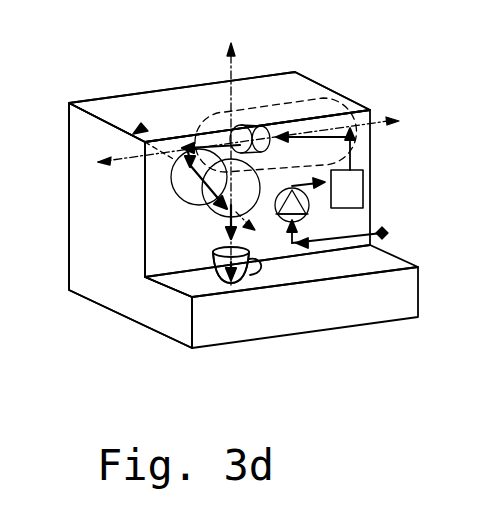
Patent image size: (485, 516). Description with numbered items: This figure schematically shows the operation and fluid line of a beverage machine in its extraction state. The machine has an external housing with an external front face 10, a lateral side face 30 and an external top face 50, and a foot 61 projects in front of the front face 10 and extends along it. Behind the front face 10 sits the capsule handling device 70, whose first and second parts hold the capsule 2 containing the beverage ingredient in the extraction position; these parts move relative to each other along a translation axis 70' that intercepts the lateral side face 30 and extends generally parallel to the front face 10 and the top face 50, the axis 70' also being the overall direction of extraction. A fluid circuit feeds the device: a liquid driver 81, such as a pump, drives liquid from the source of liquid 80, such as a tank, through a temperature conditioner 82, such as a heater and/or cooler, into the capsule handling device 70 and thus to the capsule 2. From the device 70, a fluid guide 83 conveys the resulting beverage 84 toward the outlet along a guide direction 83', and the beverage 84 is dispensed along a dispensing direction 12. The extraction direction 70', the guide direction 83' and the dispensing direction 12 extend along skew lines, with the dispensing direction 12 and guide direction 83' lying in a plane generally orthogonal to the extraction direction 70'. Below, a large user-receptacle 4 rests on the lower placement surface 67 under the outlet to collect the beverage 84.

The capsule 2 is at (236, 158).
The large user-receptacle 4 is at (253, 268).
The external front face 10 is at (152, 237).
The dispensing direction 12 is at (235, 68).
The external lateral side face 30 is at (72, 168).
The external top face 50 is at (102, 105).
The foot 61 is at (390, 295).
The lower placement surface 67 is at (222, 285).
The capsule handling device 70 is at (258, 115).
The translation axis 70' is at (255, 148).
The source of liquid 80 is at (382, 233).
The liquid driver 81 is at (281, 211).
The temperature conditioner 82 is at (358, 187).
The fluid guide 83 is at (202, 189).
The guide direction 83' is at (162, 115).
The beverage 84 is at (228, 223).